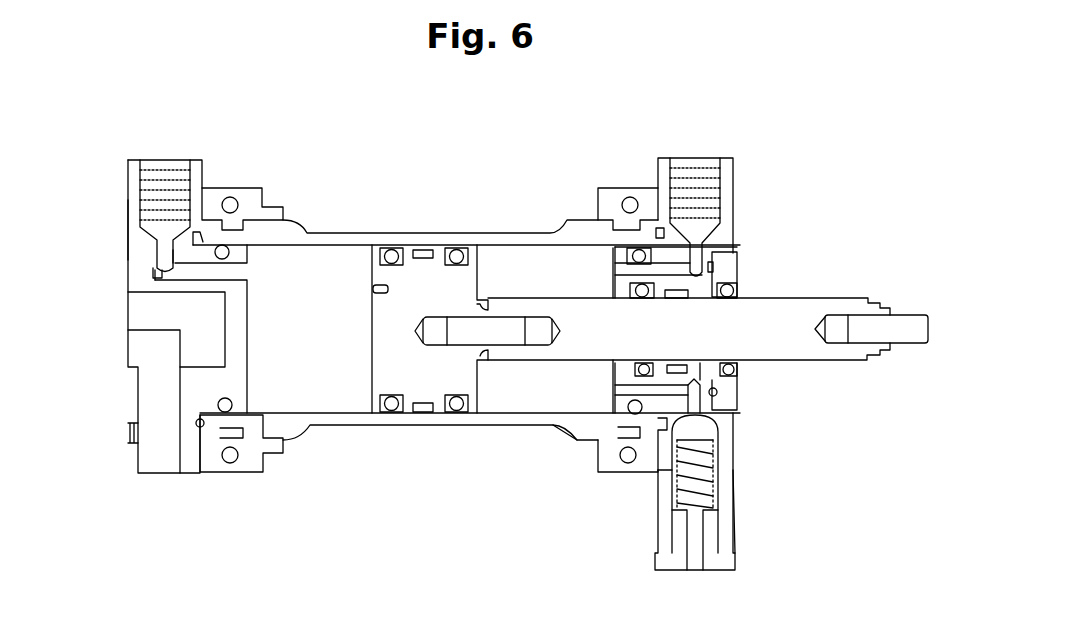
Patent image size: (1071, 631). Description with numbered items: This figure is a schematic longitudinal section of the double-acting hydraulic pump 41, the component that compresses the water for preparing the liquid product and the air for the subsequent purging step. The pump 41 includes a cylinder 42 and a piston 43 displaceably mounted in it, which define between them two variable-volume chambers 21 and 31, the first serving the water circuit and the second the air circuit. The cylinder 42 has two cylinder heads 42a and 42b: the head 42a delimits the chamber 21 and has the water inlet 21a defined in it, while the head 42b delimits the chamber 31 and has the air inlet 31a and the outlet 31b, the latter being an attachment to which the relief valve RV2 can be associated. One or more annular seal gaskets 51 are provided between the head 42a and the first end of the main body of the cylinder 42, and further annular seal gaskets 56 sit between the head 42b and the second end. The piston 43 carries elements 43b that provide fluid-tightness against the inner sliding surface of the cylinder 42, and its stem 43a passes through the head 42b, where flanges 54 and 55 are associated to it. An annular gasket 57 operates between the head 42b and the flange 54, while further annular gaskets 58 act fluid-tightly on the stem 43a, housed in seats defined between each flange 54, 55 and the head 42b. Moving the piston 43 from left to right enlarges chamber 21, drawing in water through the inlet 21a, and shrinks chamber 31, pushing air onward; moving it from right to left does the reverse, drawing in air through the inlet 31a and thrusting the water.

The double-acting hydraulic pump 41 is at (398, 162).
The variable-volume chamber 21 is at (291, 395).
The inlet 21a is at (165, 175).
The cylinder head 42a is at (127, 228).
The annular seal gaskets 51 is at (220, 406).
The fluid-tightness elements 43b is at (370, 343).
The piston 43 is at (455, 406).
The stem 43a is at (775, 310).
The variable-volume chamber 31 is at (552, 276).
The inlet 31a is at (698, 175).
The flange 54 is at (737, 265).
The flange 55 is at (610, 280).
The annular seal gaskets 56 is at (660, 226).
The annular gaskets 58 is at (638, 368).
The annular gasket 57 is at (718, 393).
The outlet 31b is at (716, 495).
The relief valve RV2 is at (688, 445).
The cylinder 42 is at (568, 437).
The cylinder head 42b is at (738, 526).